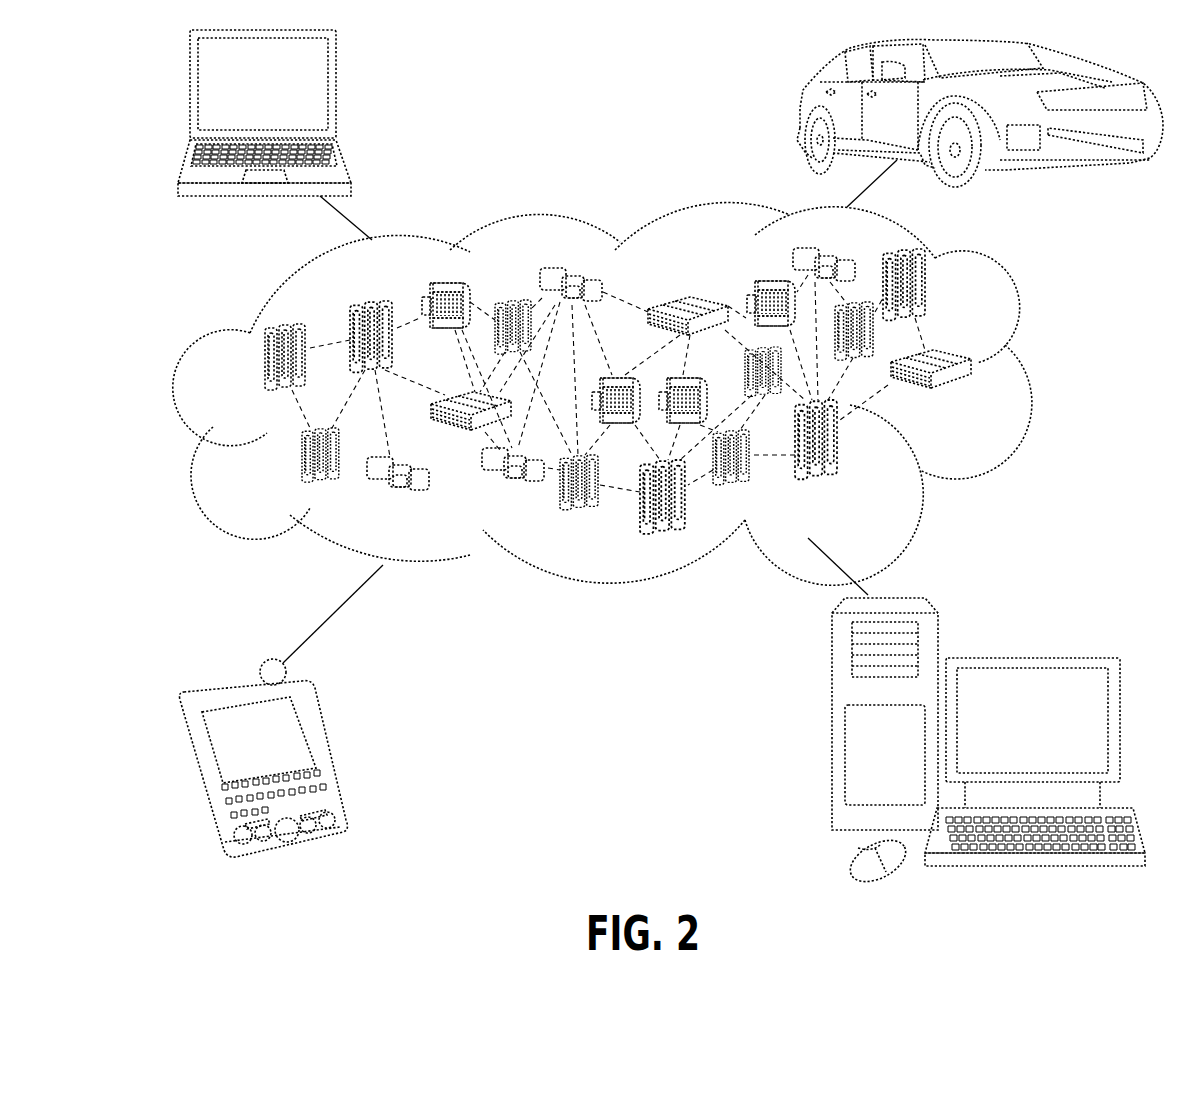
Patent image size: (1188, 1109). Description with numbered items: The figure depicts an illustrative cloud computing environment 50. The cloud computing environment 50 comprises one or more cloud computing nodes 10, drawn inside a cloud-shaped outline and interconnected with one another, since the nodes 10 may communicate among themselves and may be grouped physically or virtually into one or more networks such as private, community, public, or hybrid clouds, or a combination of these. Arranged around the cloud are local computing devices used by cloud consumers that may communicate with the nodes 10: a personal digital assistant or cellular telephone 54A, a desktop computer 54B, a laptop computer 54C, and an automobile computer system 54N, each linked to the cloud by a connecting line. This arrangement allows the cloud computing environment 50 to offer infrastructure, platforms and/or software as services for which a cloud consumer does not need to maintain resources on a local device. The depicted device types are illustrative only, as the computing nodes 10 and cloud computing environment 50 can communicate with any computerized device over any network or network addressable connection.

The cloud computing nodes 10 is at (968, 397).
The cloud computing environment 50 is at (1033, 370).
The personal digital assistant (PDA) or cellular telephone 54A is at (327, 752).
The desktop computer 54B is at (1030, 657).
The laptop computer 54C is at (337, 92).
The automobile computer system 54N is at (798, 110).